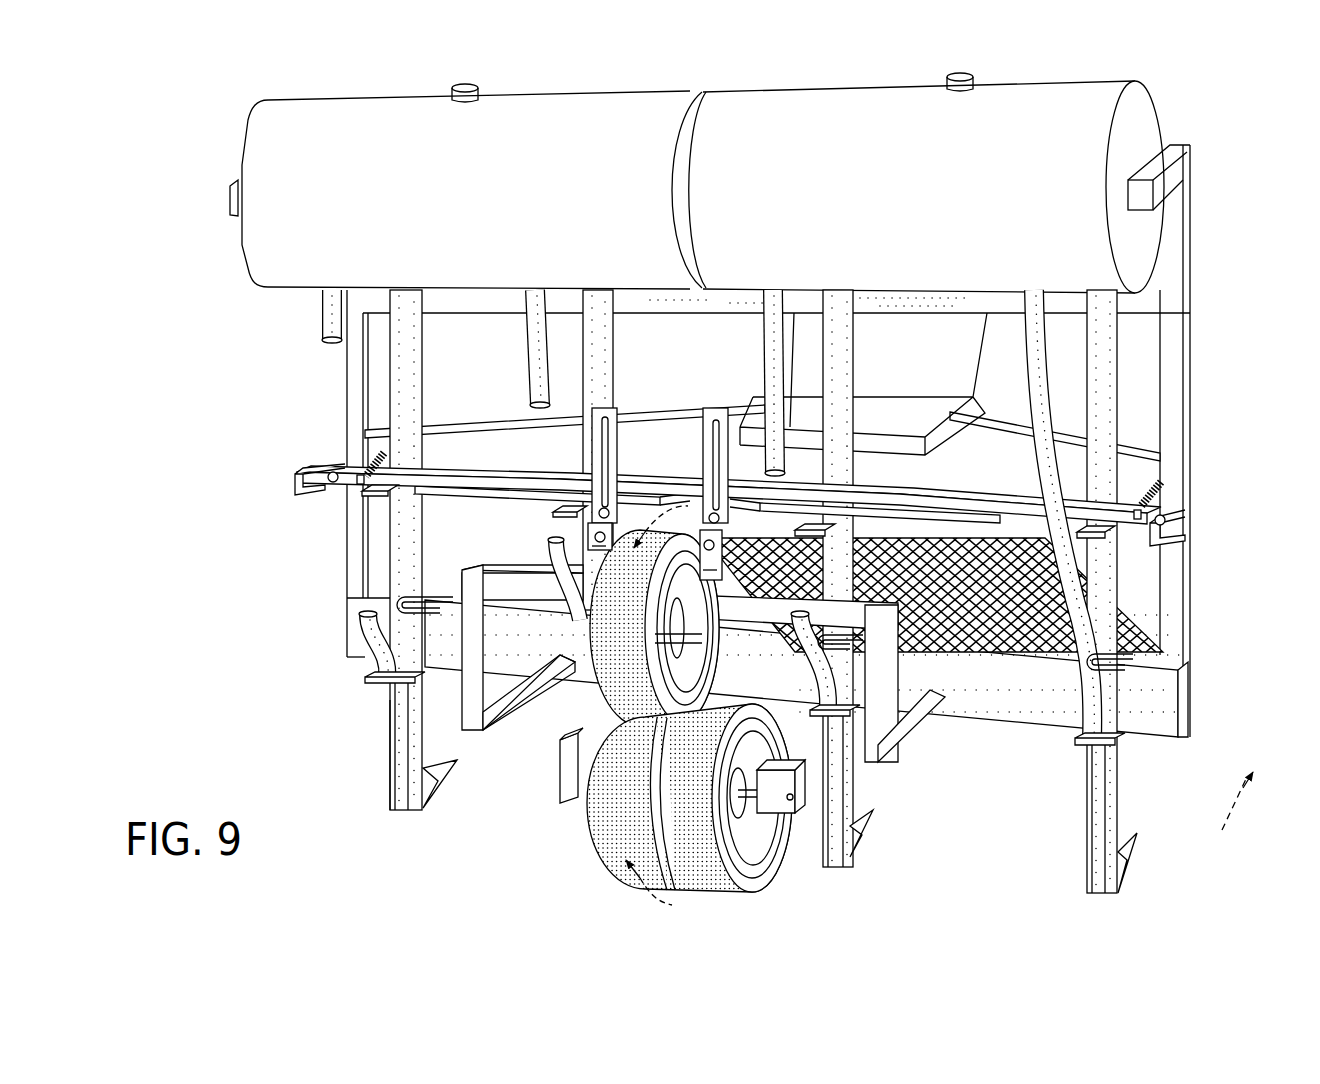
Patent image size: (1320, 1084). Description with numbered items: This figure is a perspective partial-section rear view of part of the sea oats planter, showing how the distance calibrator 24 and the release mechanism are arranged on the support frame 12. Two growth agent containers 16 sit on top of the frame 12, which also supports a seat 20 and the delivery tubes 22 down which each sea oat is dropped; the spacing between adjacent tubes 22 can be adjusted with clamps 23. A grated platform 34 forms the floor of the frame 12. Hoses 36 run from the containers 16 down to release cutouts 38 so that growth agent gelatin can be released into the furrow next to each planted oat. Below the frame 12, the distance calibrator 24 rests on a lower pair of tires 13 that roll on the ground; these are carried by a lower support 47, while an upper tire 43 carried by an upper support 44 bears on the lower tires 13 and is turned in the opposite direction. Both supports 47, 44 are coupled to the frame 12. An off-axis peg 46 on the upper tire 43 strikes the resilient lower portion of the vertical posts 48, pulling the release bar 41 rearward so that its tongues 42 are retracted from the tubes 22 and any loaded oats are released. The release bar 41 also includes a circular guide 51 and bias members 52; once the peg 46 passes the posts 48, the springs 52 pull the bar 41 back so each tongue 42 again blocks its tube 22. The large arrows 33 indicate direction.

The support frame 12 is at (343, 376).
The lower tires 13 is at (605, 845).
The growth agent containers 16 is at (423, 210).
The seat 20 is at (935, 359).
The delivery tubes 22 is at (420, 348).
The clamps 23 is at (395, 600).
The distance calibrator 24 is at (573, 848).
The direction arrow 33 is at (440, 790).
The grated platform 34 is at (1003, 550).
The hoses 36 is at (768, 349).
The release slot or cutouts 38 is at (405, 785).
The release bar 41 is at (512, 474).
The tongues 42 is at (378, 496).
The upper tire 43 is at (610, 683).
The upper support 44 is at (500, 572).
The peg 46 is at (548, 598).
The lower support 47 is at (563, 761).
The vertical posts 48 is at (703, 452).
The circular guide 51 is at (330, 468).
The bias members 52 is at (383, 453).